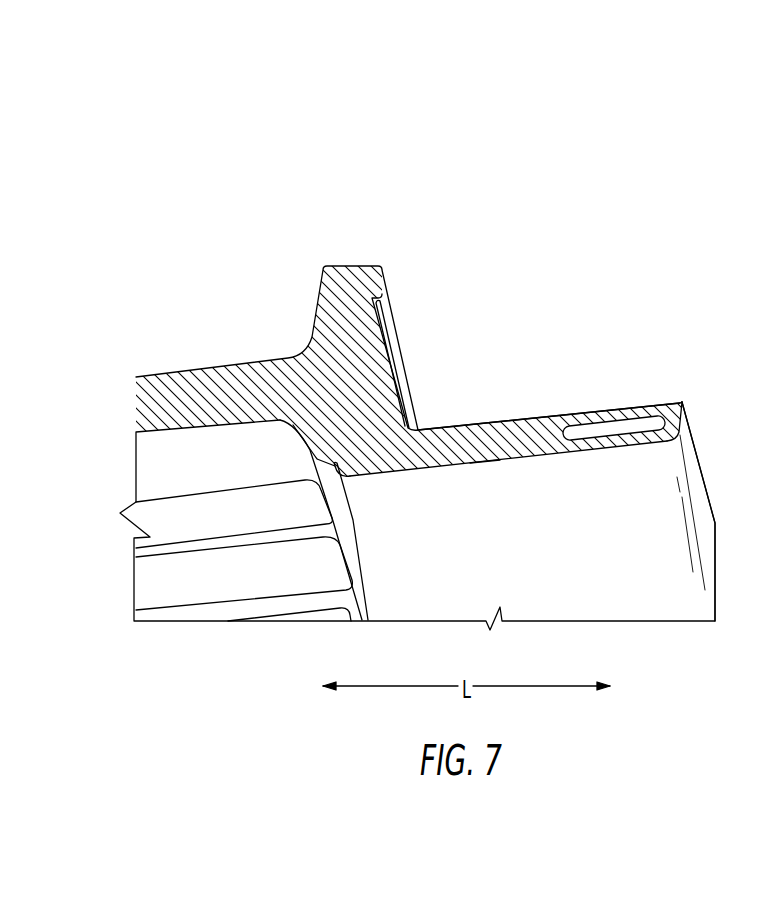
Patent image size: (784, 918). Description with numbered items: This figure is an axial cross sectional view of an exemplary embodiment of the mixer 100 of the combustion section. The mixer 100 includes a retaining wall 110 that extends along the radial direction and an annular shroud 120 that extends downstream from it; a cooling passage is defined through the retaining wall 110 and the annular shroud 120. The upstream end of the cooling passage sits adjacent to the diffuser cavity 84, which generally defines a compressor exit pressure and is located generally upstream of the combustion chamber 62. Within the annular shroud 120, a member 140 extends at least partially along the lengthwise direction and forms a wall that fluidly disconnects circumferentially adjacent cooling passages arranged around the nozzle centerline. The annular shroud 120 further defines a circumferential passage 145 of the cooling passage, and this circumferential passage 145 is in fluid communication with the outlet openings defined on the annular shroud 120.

The mixer 100 is at (392, 421).
The retaining wall 110 is at (342, 296).
The annular shroud 120 is at (527, 422).
The circumferential passage 145 is at (633, 424).
The member 140 is at (478, 456).
The diffuser cavity 84 is at (135, 325).
The combustion chamber 62 is at (755, 535).